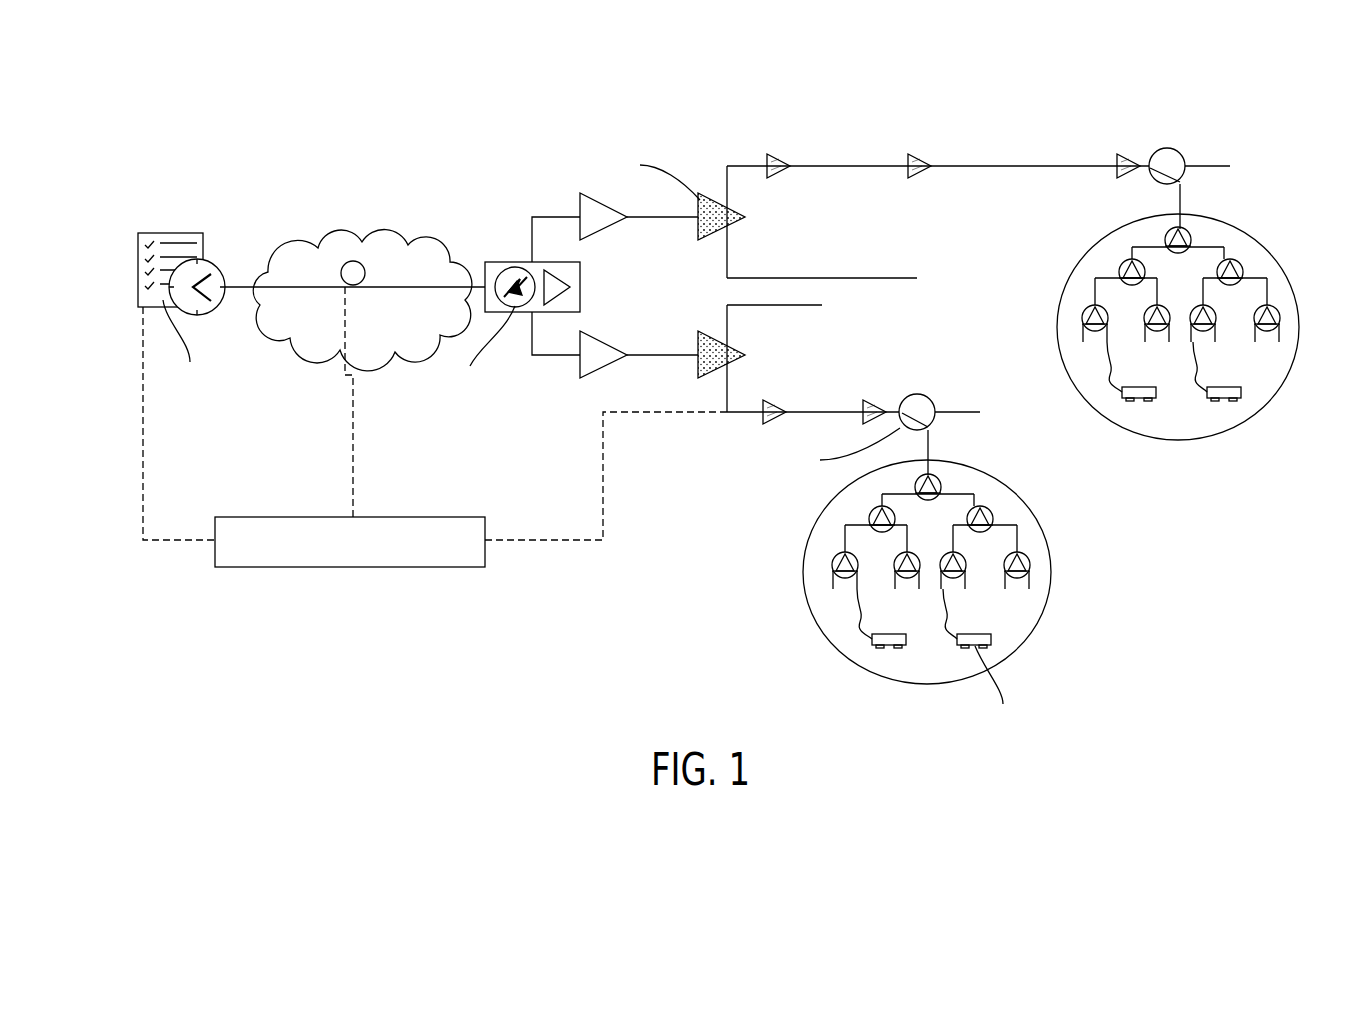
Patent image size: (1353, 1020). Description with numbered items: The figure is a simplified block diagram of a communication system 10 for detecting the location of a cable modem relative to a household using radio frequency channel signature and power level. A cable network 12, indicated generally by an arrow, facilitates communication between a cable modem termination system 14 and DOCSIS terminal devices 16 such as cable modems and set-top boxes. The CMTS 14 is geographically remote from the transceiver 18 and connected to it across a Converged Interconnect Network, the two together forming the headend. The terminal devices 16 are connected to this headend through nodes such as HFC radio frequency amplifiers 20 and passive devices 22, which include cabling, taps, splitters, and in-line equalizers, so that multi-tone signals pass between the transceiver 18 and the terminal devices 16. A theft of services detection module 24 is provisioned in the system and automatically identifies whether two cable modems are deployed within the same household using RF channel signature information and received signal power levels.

The communication system 10 is at (155, 160).
The cable network 12 is at (959, 156).
The cable modem termination system 14 is at (223, 270).
The DOCSIS terminal devices 16 is at (1228, 401).
The transceiver 18 is at (572, 297).
The HFC radio frequency amplifiers 20 is at (745, 217).
The passive devices 22 is at (1180, 152).
The theft of services detection module 24 is at (355, 567).